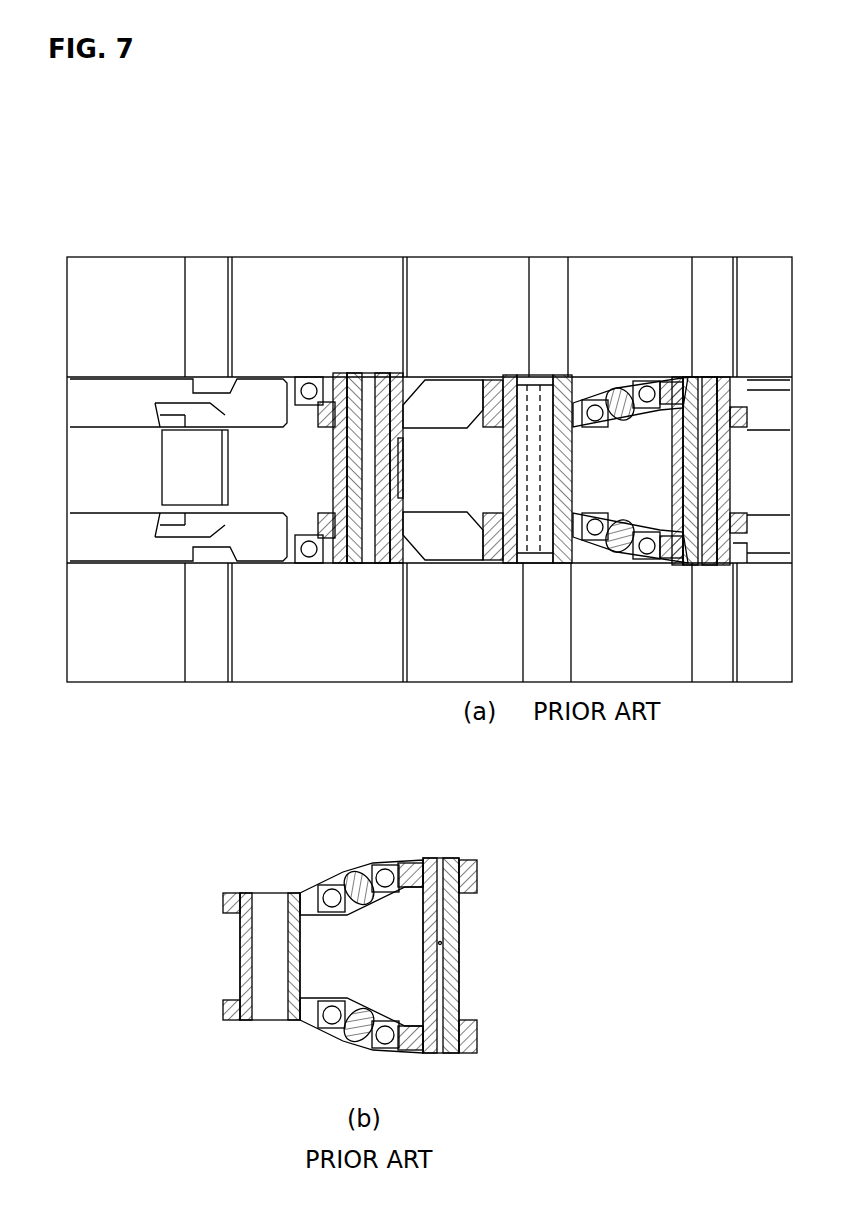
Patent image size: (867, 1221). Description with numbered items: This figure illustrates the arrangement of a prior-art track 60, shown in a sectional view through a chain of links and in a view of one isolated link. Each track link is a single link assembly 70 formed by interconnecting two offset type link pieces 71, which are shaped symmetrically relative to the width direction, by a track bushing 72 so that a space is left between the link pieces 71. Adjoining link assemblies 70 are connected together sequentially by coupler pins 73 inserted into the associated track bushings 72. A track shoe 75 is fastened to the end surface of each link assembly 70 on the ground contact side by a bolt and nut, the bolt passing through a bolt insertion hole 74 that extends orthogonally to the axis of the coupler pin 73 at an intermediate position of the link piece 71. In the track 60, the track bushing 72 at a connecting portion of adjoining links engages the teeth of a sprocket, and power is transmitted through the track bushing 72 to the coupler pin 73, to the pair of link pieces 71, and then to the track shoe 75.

The track 60 is at (717, 232).
The link assembly 70 is at (337, 372).
The link piece 71 is at (612, 397).
The track bushing 72 is at (503, 471).
The coupler pin 73 is at (530, 377).
The bolt insertion hole 74 is at (307, 380).
The track shoe 75 is at (332, 257).